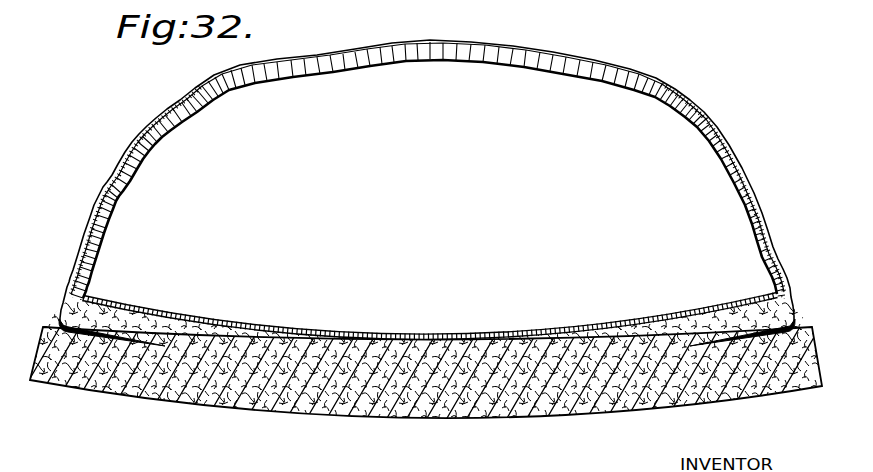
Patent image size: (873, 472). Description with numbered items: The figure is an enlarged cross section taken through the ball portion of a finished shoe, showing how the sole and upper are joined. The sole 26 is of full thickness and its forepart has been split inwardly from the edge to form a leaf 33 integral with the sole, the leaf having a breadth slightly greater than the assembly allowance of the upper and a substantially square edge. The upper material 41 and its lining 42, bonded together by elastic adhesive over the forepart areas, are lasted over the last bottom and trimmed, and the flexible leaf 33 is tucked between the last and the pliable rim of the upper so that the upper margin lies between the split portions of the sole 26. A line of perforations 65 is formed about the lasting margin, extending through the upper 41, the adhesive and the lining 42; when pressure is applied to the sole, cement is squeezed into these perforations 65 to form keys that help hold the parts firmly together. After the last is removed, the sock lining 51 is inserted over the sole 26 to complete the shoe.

The sole 26 is at (423, 420).
The leaf 33 is at (110, 307).
The upper material 41 is at (152, 126).
The lining 42 is at (162, 131).
The sock lining 51 is at (297, 333).
The perforations 65 is at (130, 308).